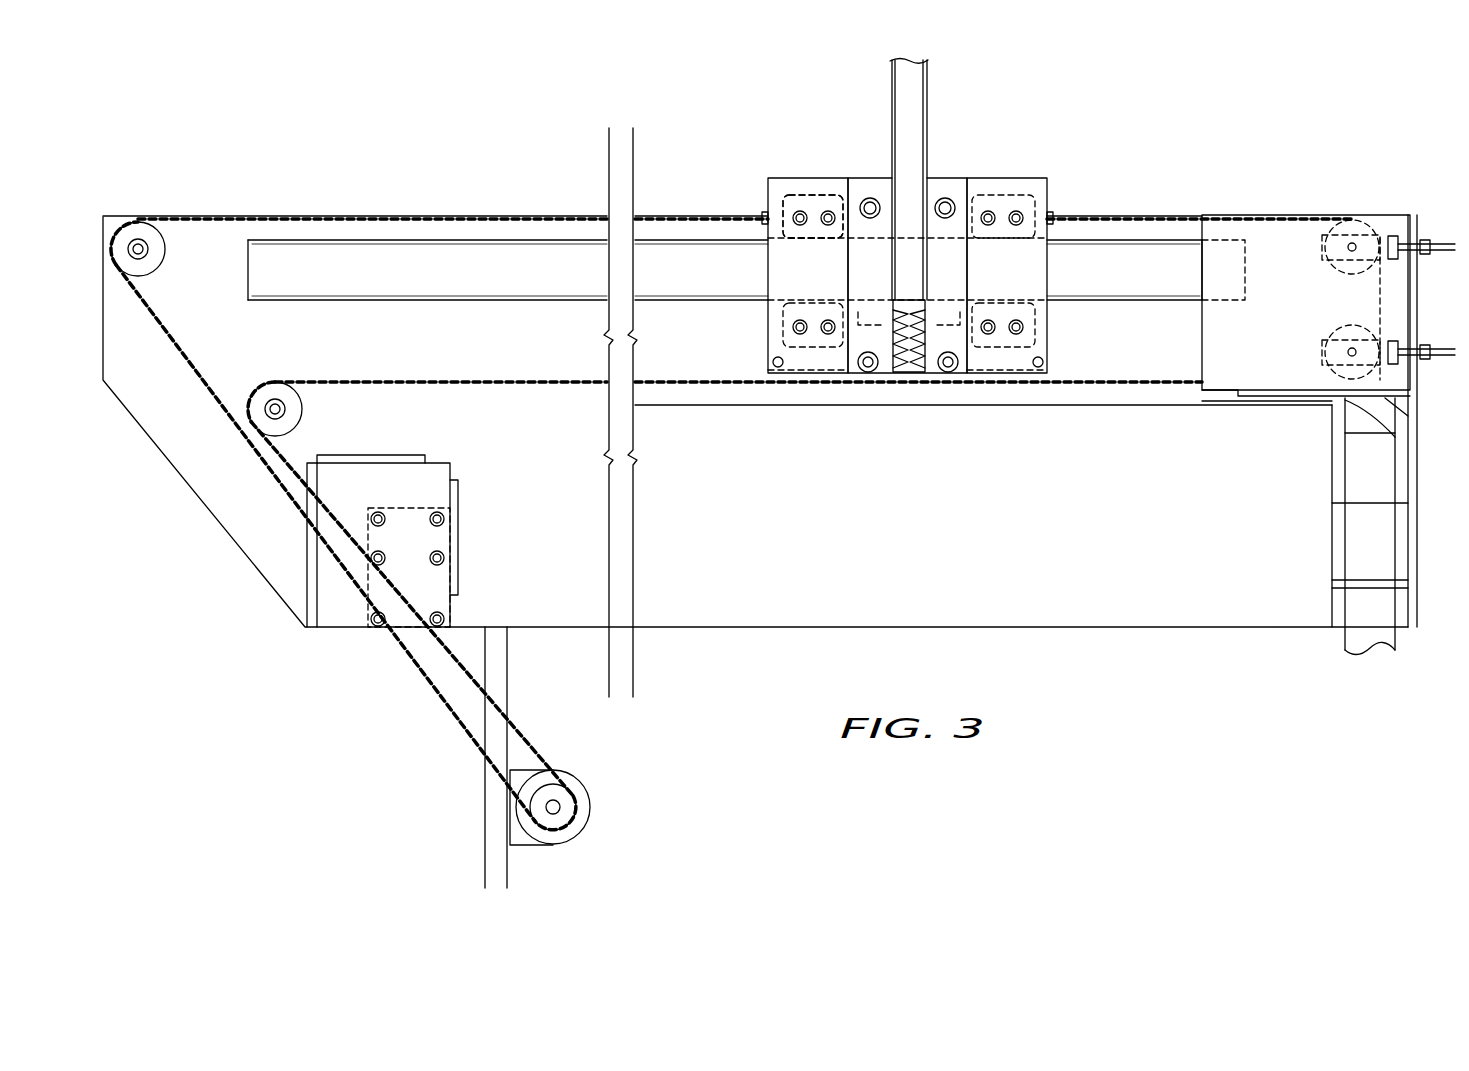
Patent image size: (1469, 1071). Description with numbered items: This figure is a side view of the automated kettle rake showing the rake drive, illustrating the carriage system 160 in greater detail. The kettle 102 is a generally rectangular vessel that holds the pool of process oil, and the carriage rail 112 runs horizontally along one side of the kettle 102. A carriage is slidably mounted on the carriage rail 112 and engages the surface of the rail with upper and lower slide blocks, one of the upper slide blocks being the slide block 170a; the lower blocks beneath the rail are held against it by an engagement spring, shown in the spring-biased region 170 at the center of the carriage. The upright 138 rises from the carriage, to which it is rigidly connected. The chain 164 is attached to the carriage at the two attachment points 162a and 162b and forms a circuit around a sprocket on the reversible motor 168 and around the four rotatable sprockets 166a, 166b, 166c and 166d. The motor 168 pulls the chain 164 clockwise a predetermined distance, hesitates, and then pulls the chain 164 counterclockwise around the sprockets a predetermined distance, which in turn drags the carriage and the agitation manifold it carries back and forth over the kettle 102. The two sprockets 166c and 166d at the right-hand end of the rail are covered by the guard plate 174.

The kettle 102 is at (760, 508).
The carriage rail 112 is at (746, 269).
The upright 138 is at (893, 92).
The carriage system 160 is at (731, 480).
The attachment point 162a is at (766, 218).
The attachment point 162b is at (1050, 218).
The chain 164 is at (184, 352).
The rotatable sprocket 166a is at (303, 407).
The rotatable sprocket 166b is at (160, 268).
The rotatable sprocket 166c is at (1348, 222).
The rotatable sprocket 166d is at (1322, 340).
The reversible motor 168 is at (590, 804).
The spring biased coupling 170 is at (906, 375).
The upper slide block 170a is at (810, 200).
The guard plate 174 is at (1306, 305).